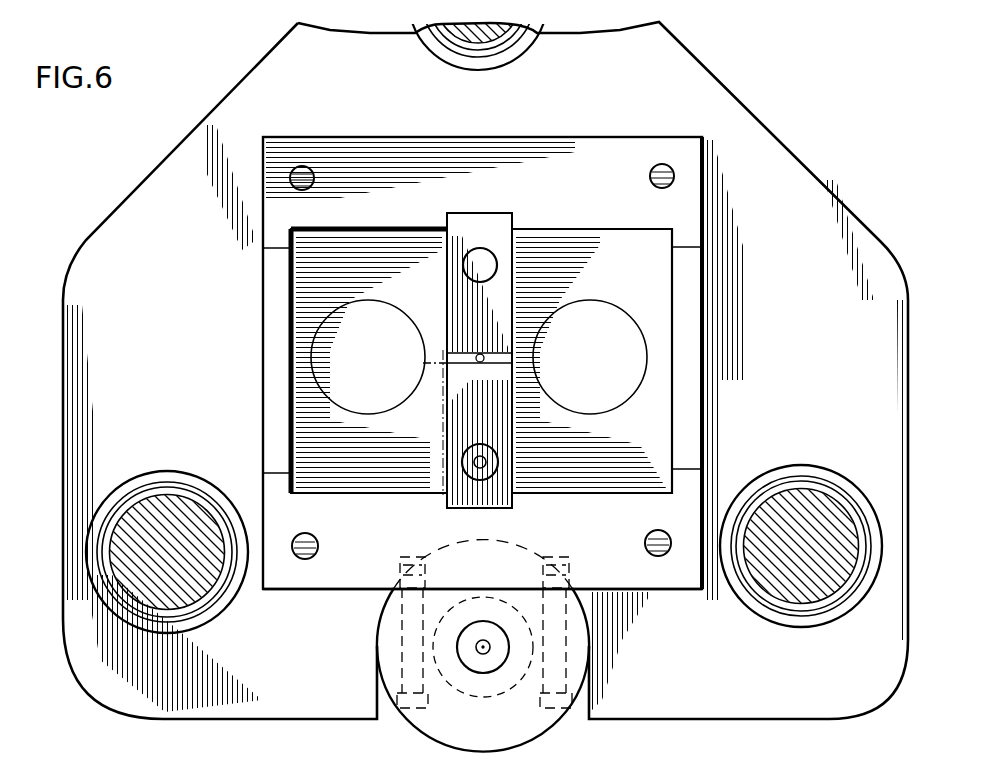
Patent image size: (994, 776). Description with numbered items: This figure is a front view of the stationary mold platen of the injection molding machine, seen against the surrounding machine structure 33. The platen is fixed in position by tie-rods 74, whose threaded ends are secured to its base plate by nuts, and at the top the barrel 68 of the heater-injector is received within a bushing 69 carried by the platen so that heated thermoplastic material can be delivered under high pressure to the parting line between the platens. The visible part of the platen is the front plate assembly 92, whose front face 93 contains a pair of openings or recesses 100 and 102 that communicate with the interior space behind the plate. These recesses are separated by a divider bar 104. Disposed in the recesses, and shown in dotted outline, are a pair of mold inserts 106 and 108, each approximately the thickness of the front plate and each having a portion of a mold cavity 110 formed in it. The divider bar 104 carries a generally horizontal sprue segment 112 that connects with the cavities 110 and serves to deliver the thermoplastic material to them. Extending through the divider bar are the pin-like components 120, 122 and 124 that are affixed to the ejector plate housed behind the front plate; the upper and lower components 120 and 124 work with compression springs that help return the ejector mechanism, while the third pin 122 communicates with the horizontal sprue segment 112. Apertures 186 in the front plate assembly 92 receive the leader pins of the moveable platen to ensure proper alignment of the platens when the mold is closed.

The housing body 33 is at (744, 118).
The barrel 68 is at (483, 650).
The bushing 69 is at (487, 654).
The tie-rods 74 is at (502, 30).
The front plate assembly 92 is at (705, 228).
The front face 93 is at (635, 524).
The recess 100 is at (489, 361).
The recess 102 is at (297, 346).
The divider bar 104 is at (487, 337).
The mold insert 106 is at (643, 288).
The mold insert 108 is at (313, 287).
The mold cavity 110 is at (366, 308).
The horizontal sprue segment 112 is at (446, 356).
The pin-like component 120 is at (484, 263).
The third pin 122 is at (478, 362).
The pin-like component 124 is at (493, 458).
The mounting hole 186 is at (296, 180).